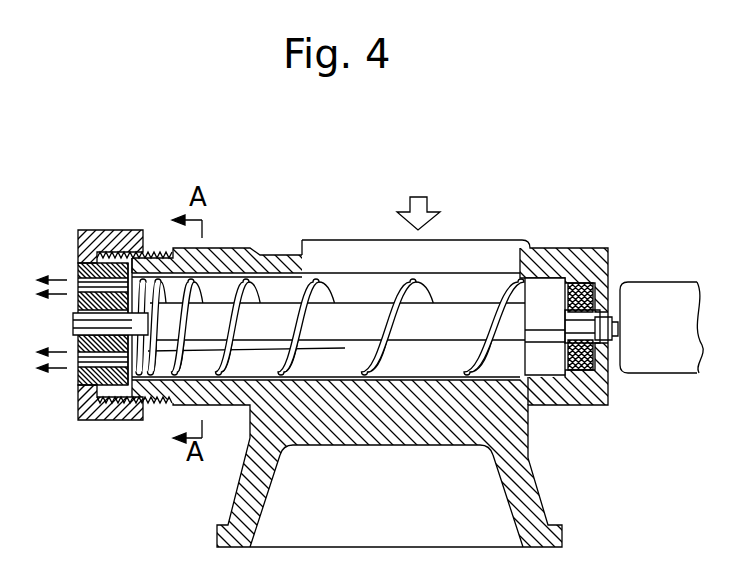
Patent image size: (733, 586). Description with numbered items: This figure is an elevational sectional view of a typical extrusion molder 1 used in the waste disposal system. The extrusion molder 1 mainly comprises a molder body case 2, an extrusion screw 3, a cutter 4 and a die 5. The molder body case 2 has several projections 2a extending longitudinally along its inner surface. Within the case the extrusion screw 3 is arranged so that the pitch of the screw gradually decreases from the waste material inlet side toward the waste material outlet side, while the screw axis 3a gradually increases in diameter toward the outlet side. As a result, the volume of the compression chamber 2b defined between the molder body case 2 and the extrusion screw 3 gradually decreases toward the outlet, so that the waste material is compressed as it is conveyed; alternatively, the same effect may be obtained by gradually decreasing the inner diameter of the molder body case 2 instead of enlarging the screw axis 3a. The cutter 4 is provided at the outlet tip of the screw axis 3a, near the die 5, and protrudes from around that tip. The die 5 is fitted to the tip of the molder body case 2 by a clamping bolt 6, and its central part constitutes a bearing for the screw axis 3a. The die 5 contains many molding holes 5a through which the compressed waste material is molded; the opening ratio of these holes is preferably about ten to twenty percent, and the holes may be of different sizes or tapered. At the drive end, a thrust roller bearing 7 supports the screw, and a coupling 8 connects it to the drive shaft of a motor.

The extrusion molder 1 is at (540, 234).
The molder body case 2 is at (257, 258).
The projections 2a is at (227, 273).
The compression chamber 2b is at (283, 293).
The extrusion screw 3 is at (383, 313).
The screw axis 3a is at (272, 350).
The cutter 4 is at (150, 297).
The die 5 is at (77, 303).
The molding holes 5a is at (80, 258).
The clamping bolt 6 is at (107, 230).
The thrust roller bearing 7 is at (576, 284).
The coupling 8 is at (645, 348).